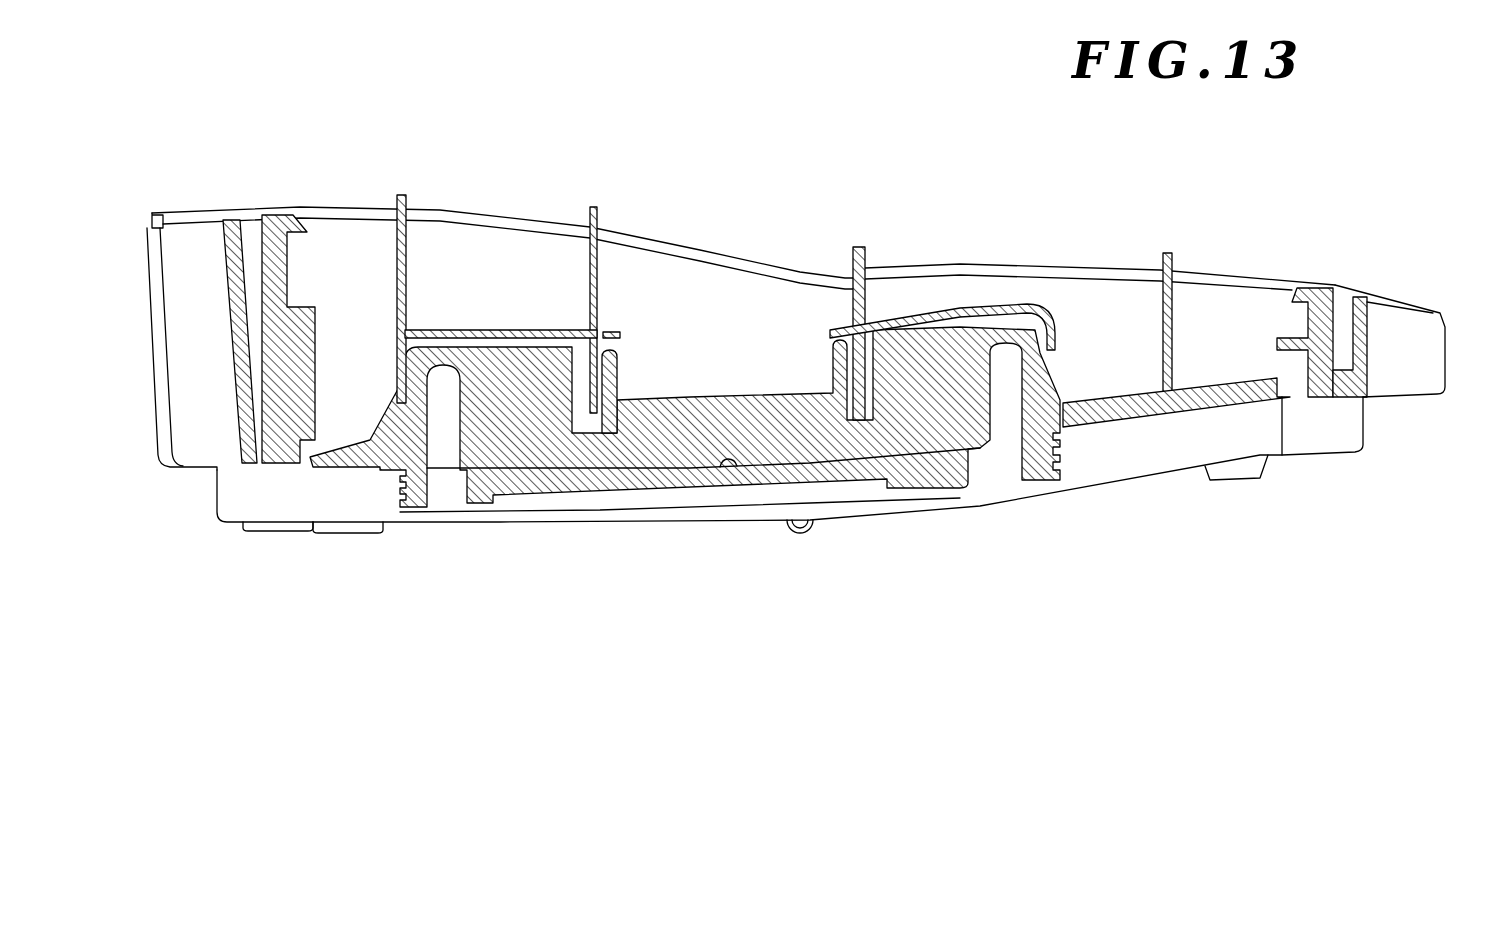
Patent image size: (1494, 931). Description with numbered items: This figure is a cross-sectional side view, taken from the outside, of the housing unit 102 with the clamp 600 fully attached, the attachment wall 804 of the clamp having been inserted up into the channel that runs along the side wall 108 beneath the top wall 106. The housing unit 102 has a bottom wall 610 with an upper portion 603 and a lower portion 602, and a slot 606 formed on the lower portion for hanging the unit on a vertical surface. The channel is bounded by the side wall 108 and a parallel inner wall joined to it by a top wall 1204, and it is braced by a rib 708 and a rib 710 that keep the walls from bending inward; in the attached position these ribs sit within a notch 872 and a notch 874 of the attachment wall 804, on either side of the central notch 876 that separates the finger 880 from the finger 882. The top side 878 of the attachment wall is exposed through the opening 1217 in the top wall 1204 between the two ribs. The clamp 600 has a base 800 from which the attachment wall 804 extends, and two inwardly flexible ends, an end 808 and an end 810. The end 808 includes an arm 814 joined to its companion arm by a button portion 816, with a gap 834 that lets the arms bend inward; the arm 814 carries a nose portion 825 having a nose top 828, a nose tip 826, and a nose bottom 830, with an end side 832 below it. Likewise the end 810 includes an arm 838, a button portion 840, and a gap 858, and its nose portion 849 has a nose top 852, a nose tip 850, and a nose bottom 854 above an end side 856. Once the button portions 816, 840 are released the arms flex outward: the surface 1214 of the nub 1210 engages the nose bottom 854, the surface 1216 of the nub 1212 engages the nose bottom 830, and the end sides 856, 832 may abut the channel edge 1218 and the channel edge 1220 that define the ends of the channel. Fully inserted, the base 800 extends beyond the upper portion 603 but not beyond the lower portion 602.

The housing unit 102 is at (1443, 343).
The top wall 106 is at (362, 215).
The side wall 108 is at (322, 245).
The clamp 600 is at (527, 493).
The lower portion 602 is at (490, 518).
The upper portion 603 is at (432, 455).
The slot 606 is at (323, 533).
The bottom wall 610 is at (1323, 457).
The rib 708 is at (585, 352).
The rib 710 is at (850, 330).
The base 800 is at (570, 487).
The attachment wall 804 is at (727, 392).
The end 808 is at (1140, 502).
The end 810 is at (390, 562).
The arm 814 is at (410, 370).
The button portion 816 is at (400, 490).
The nose portion 825 is at (384, 392).
The nose tip 826 is at (372, 438).
The nose top 828 is at (360, 400).
The nose bottom 830 is at (378, 458).
The end side 832 is at (313, 458).
The gap 834 is at (452, 455).
The arm 838 is at (1058, 395).
The button portion 840 is at (1060, 460).
The nose portion 849 is at (1042, 385).
The nose tip 850 is at (1070, 403).
The nose top 852 is at (1062, 393).
The nose bottom 854 is at (1167, 400).
The end side 856 is at (1067, 420).
The gap 858 is at (1000, 430).
The notch 872 is at (590, 417).
The notch 874 is at (870, 405).
The notch 876 is at (653, 393).
The top side 878 is at (702, 395).
The finger 880 is at (598, 355).
The finger 882 is at (843, 340).
The top wall 1204 is at (497, 333).
The nub 1210 is at (1067, 417).
The nub 1212 is at (375, 447).
The surface 1214 is at (1073, 410).
The surface 1216 is at (372, 443).
The opening 1217 is at (637, 385).
The channel edge 1218 is at (1057, 447).
The channel edge 1220 is at (385, 482).